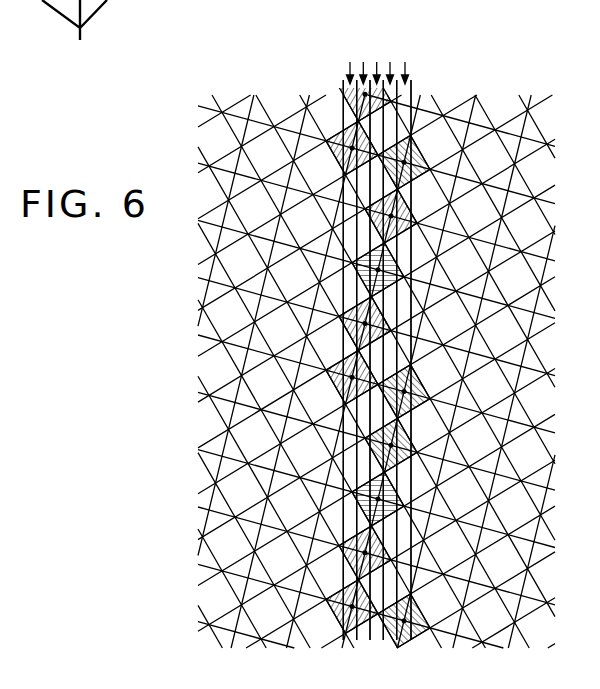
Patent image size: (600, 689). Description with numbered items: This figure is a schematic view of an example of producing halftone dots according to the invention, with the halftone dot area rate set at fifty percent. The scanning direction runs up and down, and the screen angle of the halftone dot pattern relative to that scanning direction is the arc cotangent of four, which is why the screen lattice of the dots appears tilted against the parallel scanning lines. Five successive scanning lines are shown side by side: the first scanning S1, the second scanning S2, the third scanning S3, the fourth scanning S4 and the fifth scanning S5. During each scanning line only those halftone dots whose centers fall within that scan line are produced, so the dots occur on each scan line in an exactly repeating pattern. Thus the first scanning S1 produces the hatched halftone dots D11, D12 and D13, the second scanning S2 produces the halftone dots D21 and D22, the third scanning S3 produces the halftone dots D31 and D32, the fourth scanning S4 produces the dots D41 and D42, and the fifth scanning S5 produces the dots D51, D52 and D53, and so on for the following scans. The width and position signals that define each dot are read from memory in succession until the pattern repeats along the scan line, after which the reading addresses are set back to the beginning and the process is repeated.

The first scanning S1 is at (350, 62).
The second scanning S2 is at (363, 62).
The third scanning S3 is at (377, 62).
The fourth scanning S4 is at (390, 62).
The fifth scanning S5 is at (405, 62).
The halftone dot D11 is at (342, 152).
The halftone dot D12 is at (340, 385).
The halftone dot D13 is at (334, 608).
The halftone dot D21 is at (385, 320).
The halftone dot D22 is at (347, 551).
The halftone dot D31 is at (398, 264).
The halftone dot D32 is at (345, 497).
The halftone dot D41 is at (400, 206).
The halftone dot D42 is at (402, 438).
The halftone dot D51 is at (412, 152).
The halftone dot D52 is at (410, 370).
The halftone dot D53 is at (424, 603).